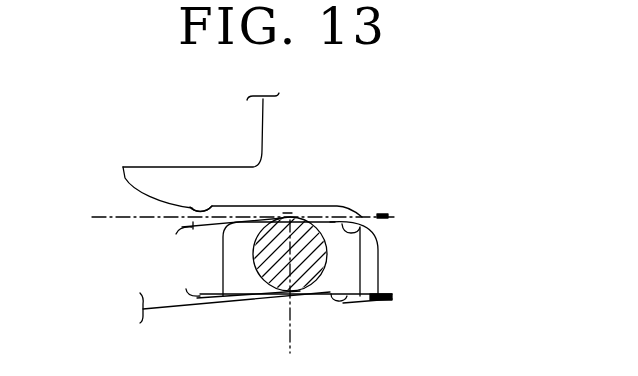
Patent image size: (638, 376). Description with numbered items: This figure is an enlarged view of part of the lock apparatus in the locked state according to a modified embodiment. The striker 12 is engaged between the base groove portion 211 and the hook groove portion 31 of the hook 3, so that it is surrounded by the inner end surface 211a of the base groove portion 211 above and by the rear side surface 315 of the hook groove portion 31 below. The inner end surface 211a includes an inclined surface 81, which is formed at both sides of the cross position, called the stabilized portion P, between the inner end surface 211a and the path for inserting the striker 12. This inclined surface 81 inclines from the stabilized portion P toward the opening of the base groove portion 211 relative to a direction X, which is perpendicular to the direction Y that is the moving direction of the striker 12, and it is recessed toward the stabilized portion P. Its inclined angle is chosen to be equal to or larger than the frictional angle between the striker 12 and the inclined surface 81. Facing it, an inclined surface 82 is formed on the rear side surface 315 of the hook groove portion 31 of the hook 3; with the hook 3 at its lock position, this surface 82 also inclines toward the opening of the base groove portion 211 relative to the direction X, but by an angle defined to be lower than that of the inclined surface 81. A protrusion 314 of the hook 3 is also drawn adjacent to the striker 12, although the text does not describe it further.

The hook 3 is at (228, 167).
The protrusion of upper plate 314 is at (195, 211).
The hook groove portion 31 is at (179, 305).
The striker 12 is at (290, 254).
The base groove portion 211 is at (308, 238).
The inner end surface 211a is at (383, 187).
The inclined surface 81 is at (355, 228).
The rear side surface 315 is at (363, 314).
The inclined surface 82 is at (337, 295).
The stabilized portion P is at (287, 213).
The direction X is at (102, 216).
The direction Y is at (288, 349).